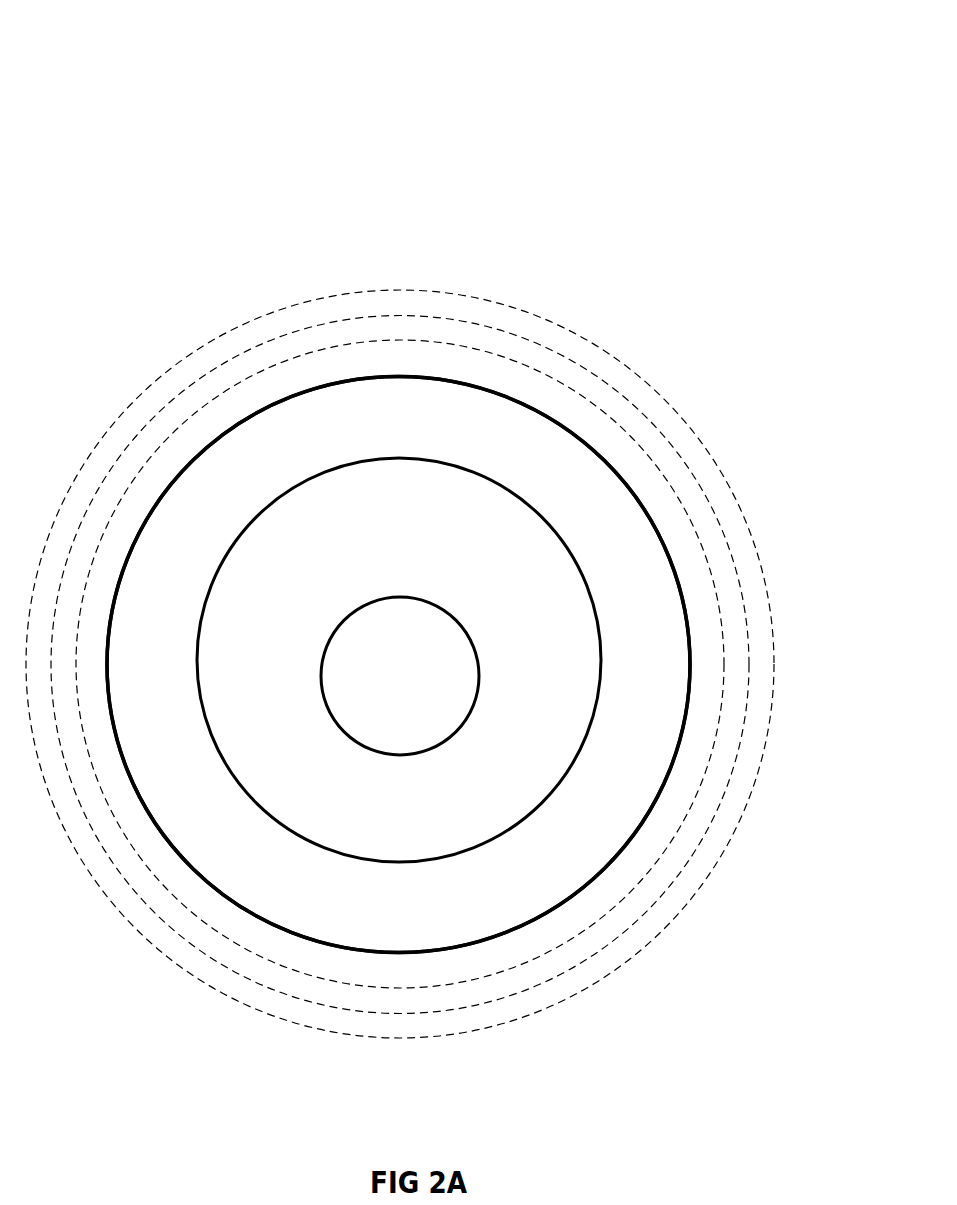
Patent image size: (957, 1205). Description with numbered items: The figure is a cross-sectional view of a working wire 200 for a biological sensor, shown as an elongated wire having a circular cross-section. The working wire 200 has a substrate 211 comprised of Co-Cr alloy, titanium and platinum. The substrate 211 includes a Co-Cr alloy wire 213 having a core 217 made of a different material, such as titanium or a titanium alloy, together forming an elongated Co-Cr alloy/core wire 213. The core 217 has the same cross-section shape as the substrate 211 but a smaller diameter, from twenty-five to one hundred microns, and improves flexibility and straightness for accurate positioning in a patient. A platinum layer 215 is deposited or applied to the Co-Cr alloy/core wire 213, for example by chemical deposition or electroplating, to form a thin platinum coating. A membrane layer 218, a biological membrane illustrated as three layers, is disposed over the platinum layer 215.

The working wire 200 is at (682, 124).
The substrate 211 is at (317, 368).
The Co-Cr alloy wire 213 is at (535, 520).
The platinum layer 215 is at (668, 547).
The core 217 is at (403, 597).
The membrane layer 218 is at (180, 343).